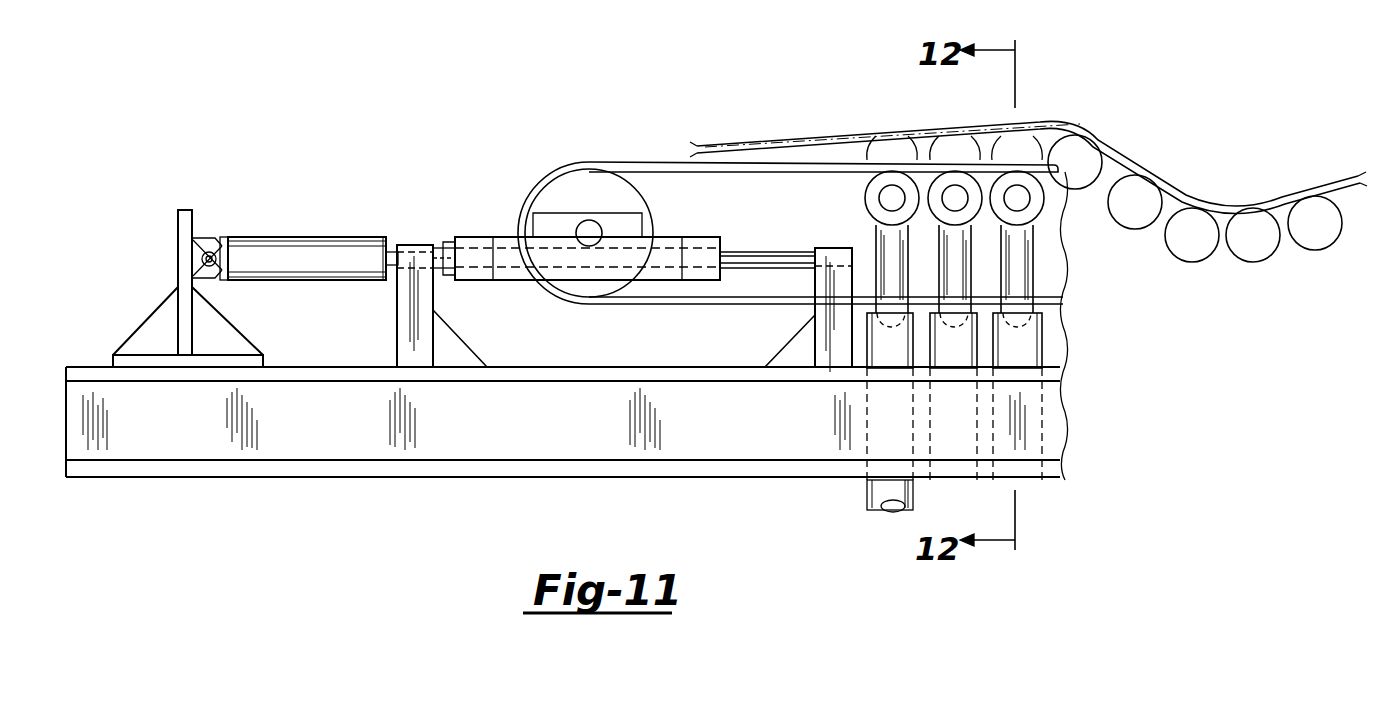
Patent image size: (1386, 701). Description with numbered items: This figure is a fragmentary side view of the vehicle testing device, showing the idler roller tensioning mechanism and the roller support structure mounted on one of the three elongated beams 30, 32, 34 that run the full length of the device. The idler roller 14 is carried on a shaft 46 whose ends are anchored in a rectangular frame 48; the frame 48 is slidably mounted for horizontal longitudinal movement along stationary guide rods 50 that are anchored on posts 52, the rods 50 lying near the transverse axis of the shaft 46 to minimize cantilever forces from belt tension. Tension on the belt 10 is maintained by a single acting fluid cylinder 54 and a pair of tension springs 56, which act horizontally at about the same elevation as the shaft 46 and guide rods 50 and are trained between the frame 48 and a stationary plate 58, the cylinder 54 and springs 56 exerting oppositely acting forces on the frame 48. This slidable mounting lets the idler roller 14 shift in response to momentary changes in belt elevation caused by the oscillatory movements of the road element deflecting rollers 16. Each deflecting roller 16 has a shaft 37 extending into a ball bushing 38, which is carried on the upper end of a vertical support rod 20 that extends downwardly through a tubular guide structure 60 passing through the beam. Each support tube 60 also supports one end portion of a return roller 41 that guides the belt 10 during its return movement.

The belt 10 is at (838, 122).
The idler roller 14 is at (625, 190).
The road element deflecting rollers 16 is at (1090, 148).
The vertical support rod 20 is at (1063, 262).
The elongated beam 30 is at (567, 353).
The elongated beam 32 is at (567, 353).
The elongated beam 34 is at (568, 455).
The shaft 37 is at (953, 187).
The ball bushing 38 is at (890, 172).
The return roller 41 is at (1043, 330).
The shaft 46 is at (592, 240).
The rectangular frame 48 is at (705, 237).
The guide rod 50 is at (441, 250).
The post 52 is at (397, 322).
The fluid cylinder 54 is at (295, 229).
The tension spring 56 is at (270, 245).
The stationary plate 58 is at (178, 232).
The tubular guide structure 60 is at (1037, 352).